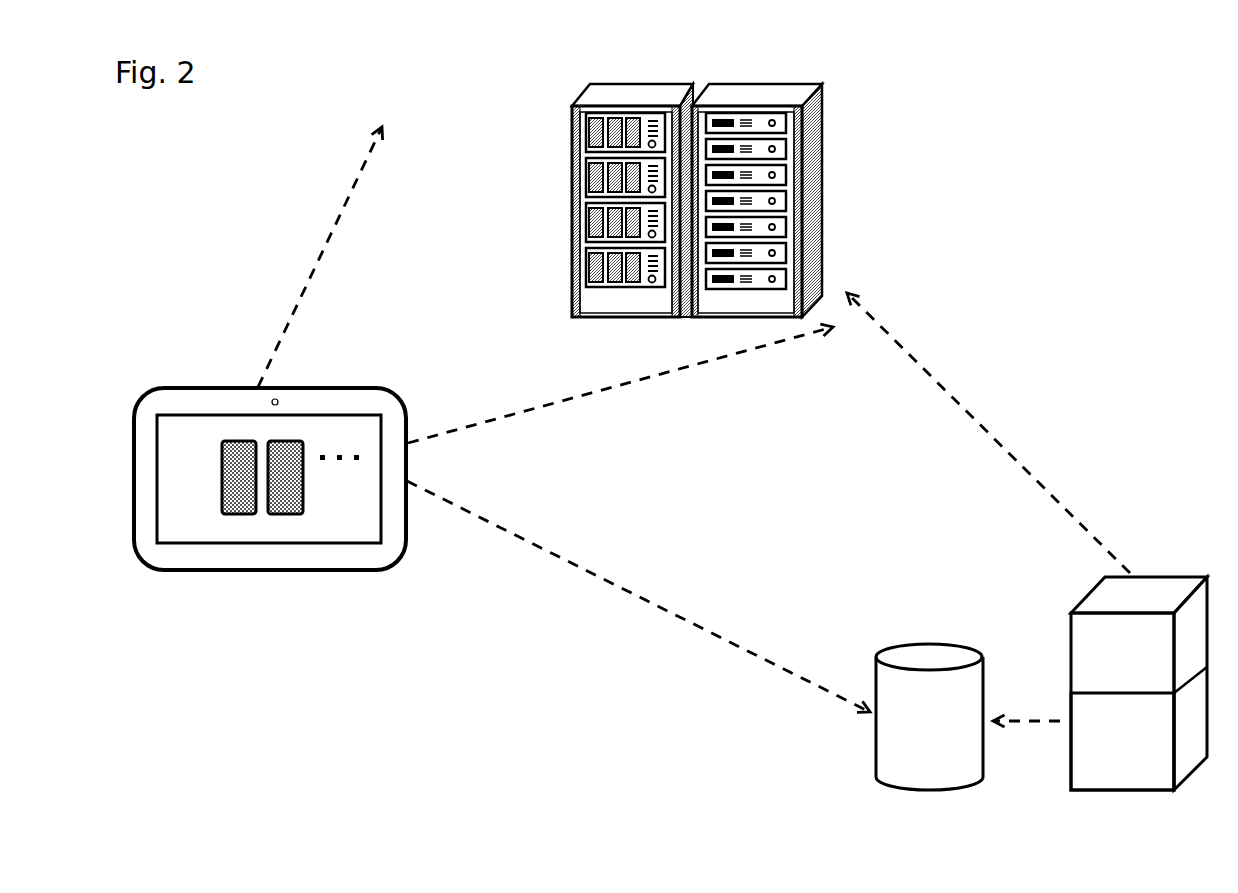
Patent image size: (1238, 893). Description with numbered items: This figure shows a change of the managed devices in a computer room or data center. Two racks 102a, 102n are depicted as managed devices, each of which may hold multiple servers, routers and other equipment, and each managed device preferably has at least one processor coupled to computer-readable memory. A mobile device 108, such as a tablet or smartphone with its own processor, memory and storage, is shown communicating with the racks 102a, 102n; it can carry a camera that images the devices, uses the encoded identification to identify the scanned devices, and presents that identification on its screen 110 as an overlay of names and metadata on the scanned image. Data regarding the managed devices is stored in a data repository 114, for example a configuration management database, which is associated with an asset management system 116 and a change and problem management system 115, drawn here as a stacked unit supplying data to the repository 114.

The rack 102a is at (571, 138).
The rack 102n is at (811, 114).
The mobile device 108 is at (193, 388).
The screen 110 is at (283, 518).
The data repository 114 is at (970, 647).
The change and problem management system 115 is at (1088, 752).
The asset management system 116 is at (1140, 577).